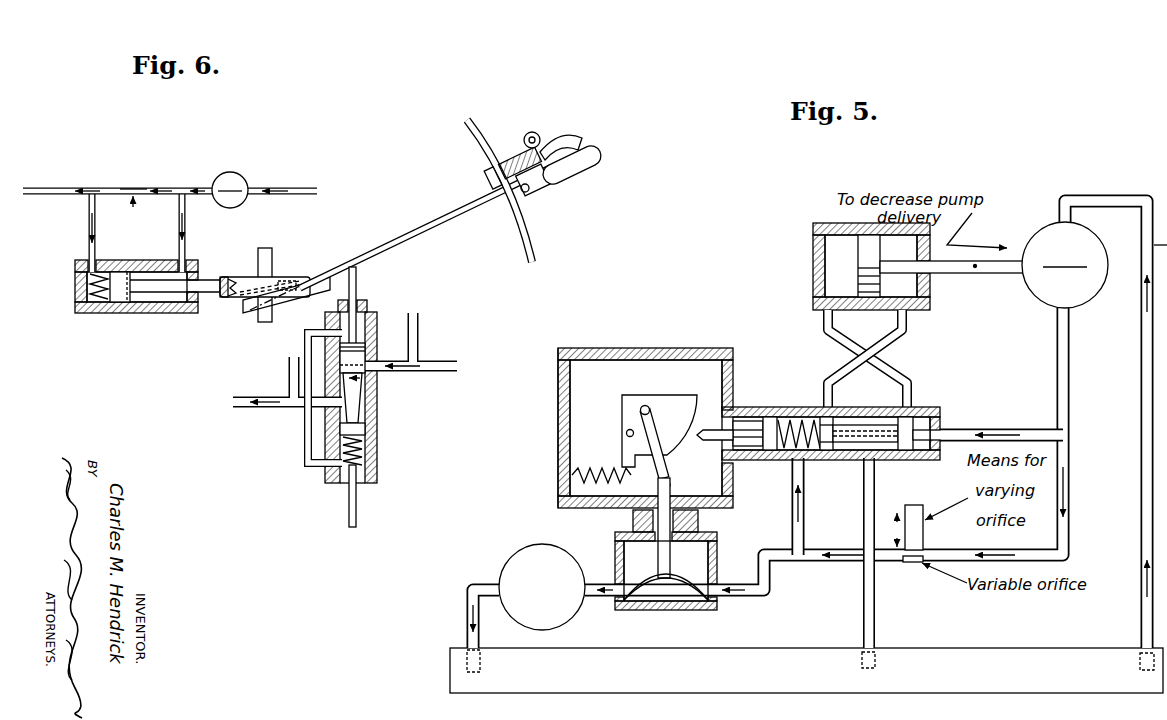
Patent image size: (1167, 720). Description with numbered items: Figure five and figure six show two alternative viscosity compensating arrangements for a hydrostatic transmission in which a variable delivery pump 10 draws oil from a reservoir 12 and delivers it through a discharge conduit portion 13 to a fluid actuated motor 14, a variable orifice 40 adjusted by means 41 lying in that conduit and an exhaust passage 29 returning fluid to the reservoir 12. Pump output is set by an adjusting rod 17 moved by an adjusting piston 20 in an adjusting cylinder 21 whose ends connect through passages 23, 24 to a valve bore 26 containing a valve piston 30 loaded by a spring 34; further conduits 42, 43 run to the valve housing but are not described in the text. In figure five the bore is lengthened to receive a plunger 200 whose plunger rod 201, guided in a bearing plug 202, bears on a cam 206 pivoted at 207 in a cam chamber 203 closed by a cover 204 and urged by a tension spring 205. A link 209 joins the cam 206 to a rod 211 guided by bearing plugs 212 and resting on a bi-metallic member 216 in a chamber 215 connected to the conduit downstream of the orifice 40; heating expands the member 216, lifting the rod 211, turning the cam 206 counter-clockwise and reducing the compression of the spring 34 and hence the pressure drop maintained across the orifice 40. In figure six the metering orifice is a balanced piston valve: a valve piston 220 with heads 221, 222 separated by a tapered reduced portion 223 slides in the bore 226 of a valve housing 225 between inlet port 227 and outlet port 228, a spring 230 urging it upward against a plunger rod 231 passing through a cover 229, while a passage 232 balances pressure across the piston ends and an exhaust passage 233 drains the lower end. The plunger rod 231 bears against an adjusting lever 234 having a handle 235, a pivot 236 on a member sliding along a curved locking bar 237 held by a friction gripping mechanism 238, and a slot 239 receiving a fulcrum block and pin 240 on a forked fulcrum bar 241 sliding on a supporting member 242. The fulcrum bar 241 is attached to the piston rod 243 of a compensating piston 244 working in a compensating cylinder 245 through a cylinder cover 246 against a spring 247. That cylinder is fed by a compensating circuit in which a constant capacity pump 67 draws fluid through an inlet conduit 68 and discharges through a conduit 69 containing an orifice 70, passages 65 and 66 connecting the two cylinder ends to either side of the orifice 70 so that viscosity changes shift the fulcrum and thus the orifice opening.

In FIG. 5, the variable delivery pump 10 is at (1093, 241).
In FIG. 5, the reservoir 12 is at (1091, 648).
In FIG. 5, the discharge conduit portion 13 is at (1070, 344).
In FIG. 5, the fluid actuated motor 14 is at (518, 550).
In FIG. 5, the adjusting rod 17 is at (1006, 274).
In FIG. 5, the adjusting piston 20 is at (866, 238).
In FIG. 5, the adjusting cylinder 21 is at (820, 228).
In FIG. 5, the passage 23 is at (905, 330).
In FIG. 5, the passage 24 is at (831, 330).
In FIG. 5, the valve bore 26 is at (935, 410).
In FIG. 5, the exhaust passage 29 is at (876, 623).
In FIG. 5, the valve piston 30 is at (906, 420).
In FIG. 5, the spring 34 is at (800, 416).
In FIG. 5, the variable orifice 40 is at (905, 563).
In FIG. 5, the orifice adjusting means 41 is at (914, 505).
In FIG. 6, the pipe 42 is at (420, 330).
In FIG. 5, the pipe 42 is at (991, 431).
In FIG. 6, the pipe 43 is at (289, 374).
In FIG. 5, the pipe 43 is at (804, 511).
In FIG. 6, the passage 65 is at (178, 210).
In FIG. 6, the passage 66 is at (88, 210).
In FIG. 6, the constant capacity pump 67 is at (244, 178).
In FIG. 6, the inlet conduit 68 is at (298, 187).
In FIG. 6, the discharge conduit 69 is at (50, 187).
In FIG. 6, the orifice 70 is at (133, 187).
In FIG. 5, the plunger 200 is at (771, 418).
In FIG. 5, the plunger rod 201 is at (746, 420).
In FIG. 5, the bearing plug 202 is at (727, 466).
In FIG. 5, the cam chamber 203 is at (646, 340).
In FIG. 5, the cover 204 is at (558, 348).
In FIG. 5, the tension spring 205 is at (596, 470).
In FIG. 5, the cam 206 is at (684, 406).
In FIG. 5, the cam pivot 207 is at (627, 431).
In FIG. 5, the link 209 is at (668, 462).
In FIG. 5, the rod 211 is at (658, 550).
In FIG. 5, the bearing plugs 212 is at (634, 521).
In FIG. 5, the chamber 215 is at (719, 537).
In FIG. 5, the bi-metallic thermostatic member 216 is at (688, 576).
In FIG. 6, the valve piston 220 is at (362, 377).
In FIG. 6, the head 221 is at (343, 356).
In FIG. 6, the head 222 is at (366, 436).
In FIG. 6, the reduced portion 223 is at (360, 390).
In FIG. 6, the valve housing 225 is at (368, 484).
In FIG. 6, the valve bore 226 is at (372, 323).
In FIG. 6, the annular port 227 is at (339, 352).
In FIG. 6, the annular port 228 is at (366, 424).
In FIG. 6, the cover 229 is at (369, 311).
In FIG. 6, the spring 230 is at (366, 456).
In FIG. 6, the plunger rod 231 is at (358, 286).
In FIG. 6, the passage 232 is at (305, 450).
In FIG. 6, the exhaust passage 233 is at (348, 514).
In FIG. 6, the adjusting lever 234 is at (410, 230).
In FIG. 6, the handle 235 is at (602, 158).
In FIG. 6, the pivotal connection 236 is at (530, 192).
In FIG. 6, the curved locking bar 237 is at (480, 130).
In FIG. 6, the friction gripping mechanism 238 is at (526, 134).
In FIG. 6, the slot 239 is at (318, 276).
In FIG. 6, the fulcrum block and pin 240 is at (282, 277).
In FIG. 6, the fulcrum bar 241 is at (228, 298).
In FIG. 6, the supporting member 242 is at (260, 256).
In FIG. 6, the piston rod 243 is at (226, 277).
In FIG. 6, the compensating piston 244 is at (103, 300).
In FIG. 6, the compensating cylinder 245 is at (124, 314).
In FIG. 6, the cylinder cover 246 is at (192, 314).
In FIG. 6, the spring 247 is at (115, 272).